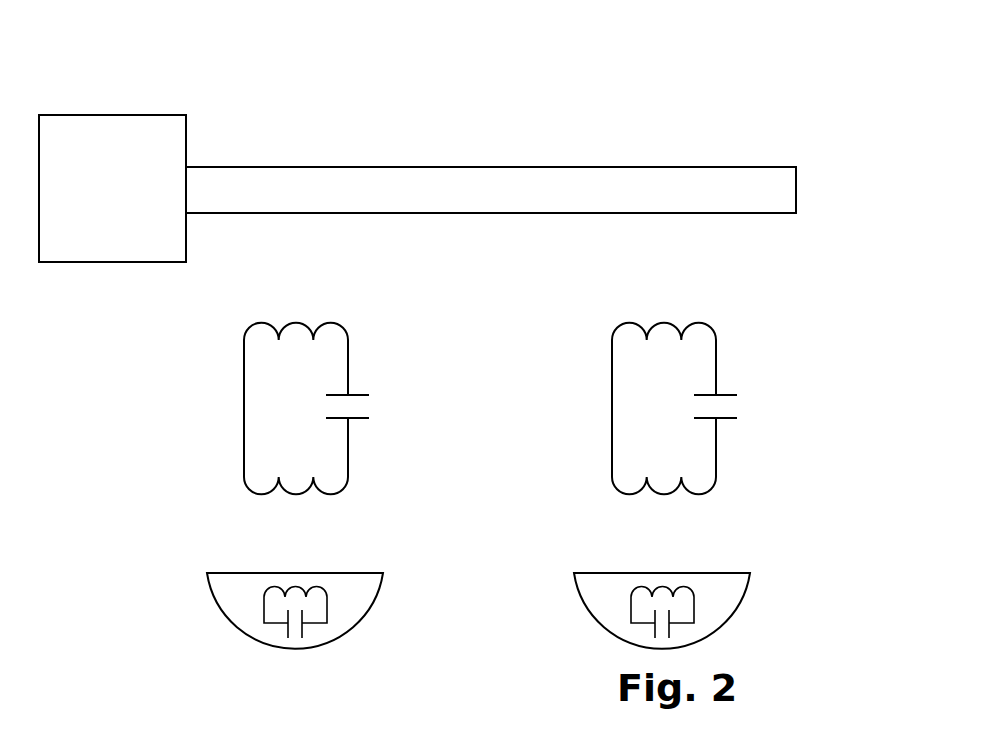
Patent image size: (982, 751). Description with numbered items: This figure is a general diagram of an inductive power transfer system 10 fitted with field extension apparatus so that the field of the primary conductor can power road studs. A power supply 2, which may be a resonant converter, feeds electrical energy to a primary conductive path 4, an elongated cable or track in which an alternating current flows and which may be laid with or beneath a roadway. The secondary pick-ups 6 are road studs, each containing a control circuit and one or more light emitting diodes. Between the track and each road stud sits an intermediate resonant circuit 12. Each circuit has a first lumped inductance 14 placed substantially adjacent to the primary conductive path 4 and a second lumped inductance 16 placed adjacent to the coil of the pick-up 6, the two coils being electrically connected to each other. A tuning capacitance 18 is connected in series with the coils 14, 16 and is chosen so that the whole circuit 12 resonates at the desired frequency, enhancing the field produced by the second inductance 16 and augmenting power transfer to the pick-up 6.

The power supply 2 is at (107, 130).
The primary conductive path 4 is at (528, 167).
The secondary pick-up 6 is at (205, 595).
The IPT system 10 is at (804, 552).
The intermediate resonant circuit 12 is at (537, 401).
The first lumped inductance 14 is at (293, 322).
The second lumped inductance 16 is at (295, 494).
The tuning capacitance 18 is at (355, 419).